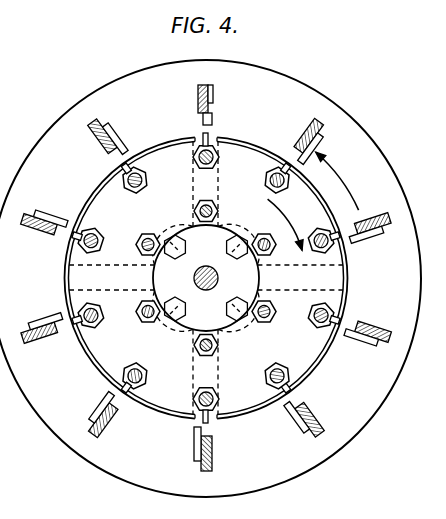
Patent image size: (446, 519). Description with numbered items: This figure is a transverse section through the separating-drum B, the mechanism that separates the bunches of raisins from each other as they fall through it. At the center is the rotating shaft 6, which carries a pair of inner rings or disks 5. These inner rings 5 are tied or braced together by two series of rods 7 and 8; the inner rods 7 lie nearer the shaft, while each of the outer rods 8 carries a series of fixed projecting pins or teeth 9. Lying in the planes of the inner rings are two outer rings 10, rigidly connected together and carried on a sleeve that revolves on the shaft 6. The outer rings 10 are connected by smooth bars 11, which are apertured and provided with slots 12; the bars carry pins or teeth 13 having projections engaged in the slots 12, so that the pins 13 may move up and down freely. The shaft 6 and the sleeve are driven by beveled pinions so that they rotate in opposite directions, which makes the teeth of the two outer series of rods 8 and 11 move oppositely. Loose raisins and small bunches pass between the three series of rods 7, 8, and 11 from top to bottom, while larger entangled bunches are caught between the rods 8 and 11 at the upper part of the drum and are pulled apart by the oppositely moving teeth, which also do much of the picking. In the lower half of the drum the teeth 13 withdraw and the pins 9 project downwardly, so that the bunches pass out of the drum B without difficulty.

The separating-drum B is at (377, 128).
The inner rings 5 is at (275, 224).
The rotating shaft 6 is at (216, 275).
The inner rods 7 is at (137, 244).
The outer rods 8 is at (141, 190).
The fixed pins 9 is at (130, 169).
The outer rings 10 is at (342, 181).
The smooth bars 11 is at (198, 93).
The slots 12 is at (213, 94).
The movable pins 13 is at (203, 120).